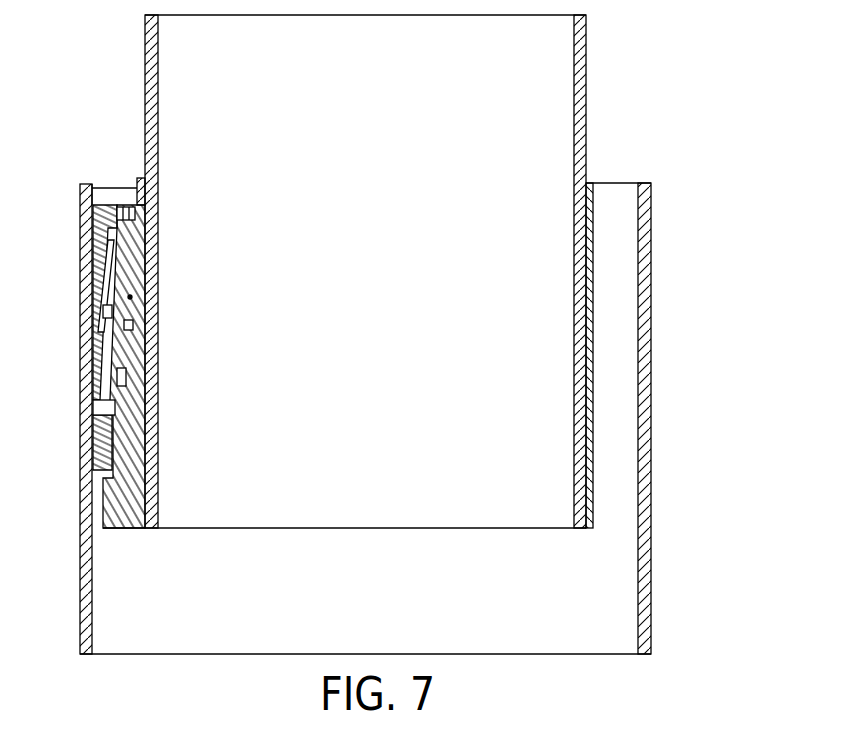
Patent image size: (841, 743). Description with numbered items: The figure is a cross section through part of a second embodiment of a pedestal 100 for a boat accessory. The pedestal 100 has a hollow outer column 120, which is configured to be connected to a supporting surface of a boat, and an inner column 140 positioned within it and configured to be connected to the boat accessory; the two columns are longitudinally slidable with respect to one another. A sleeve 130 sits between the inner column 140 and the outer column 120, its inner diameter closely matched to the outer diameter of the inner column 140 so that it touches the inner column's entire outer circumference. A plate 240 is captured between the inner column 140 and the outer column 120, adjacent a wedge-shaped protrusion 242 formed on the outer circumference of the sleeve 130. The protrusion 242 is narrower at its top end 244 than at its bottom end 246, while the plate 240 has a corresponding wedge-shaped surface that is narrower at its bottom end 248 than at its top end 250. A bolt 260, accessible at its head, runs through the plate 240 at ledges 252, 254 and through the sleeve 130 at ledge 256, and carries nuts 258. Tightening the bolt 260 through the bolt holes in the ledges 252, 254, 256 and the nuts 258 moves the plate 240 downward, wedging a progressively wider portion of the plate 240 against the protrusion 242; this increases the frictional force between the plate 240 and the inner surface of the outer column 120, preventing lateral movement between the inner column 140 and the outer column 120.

The pedestal 100 is at (645, 84).
The outer column 120 is at (652, 496).
The sleeve 130 is at (589, 378).
The inner column 140 is at (588, 151).
The plate 240 is at (95, 229).
The wedge-shaped protrusion 242 is at (106, 500).
The narrower top end 244 is at (143, 175).
The wider bottom end 246 is at (131, 518).
The narrower bottom end 248 is at (108, 471).
The wider top end 250 is at (105, 196).
The ledge 252 is at (143, 234).
The ledge 254 is at (121, 380).
The ledge 256 is at (131, 298).
The nuts 258 is at (99, 310).
The bolt 260 is at (99, 339).